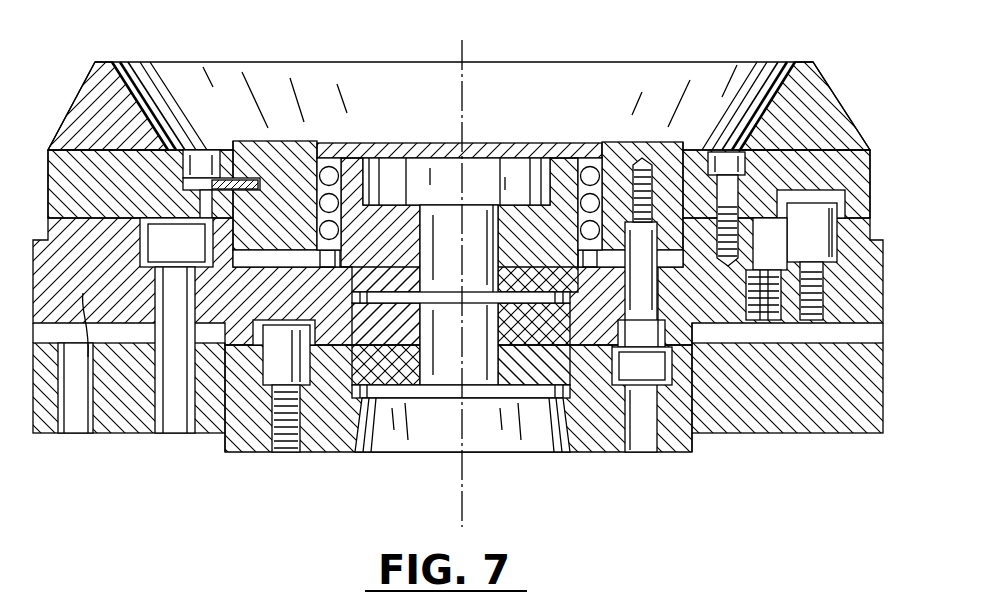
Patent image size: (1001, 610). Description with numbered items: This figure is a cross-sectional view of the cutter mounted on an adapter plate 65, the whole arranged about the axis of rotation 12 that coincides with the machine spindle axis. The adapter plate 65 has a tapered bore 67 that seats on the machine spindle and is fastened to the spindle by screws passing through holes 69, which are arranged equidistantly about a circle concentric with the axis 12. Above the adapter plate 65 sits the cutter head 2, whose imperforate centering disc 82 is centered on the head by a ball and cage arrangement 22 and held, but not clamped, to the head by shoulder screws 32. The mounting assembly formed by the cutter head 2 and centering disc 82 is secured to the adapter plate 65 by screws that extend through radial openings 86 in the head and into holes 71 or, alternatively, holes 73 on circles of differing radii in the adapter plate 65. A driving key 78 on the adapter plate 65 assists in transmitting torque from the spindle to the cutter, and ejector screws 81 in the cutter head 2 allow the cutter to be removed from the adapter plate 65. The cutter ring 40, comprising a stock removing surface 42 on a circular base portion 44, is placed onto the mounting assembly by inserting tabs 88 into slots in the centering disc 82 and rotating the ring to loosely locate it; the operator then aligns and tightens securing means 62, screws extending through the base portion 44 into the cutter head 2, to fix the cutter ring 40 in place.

The cutter head 2 is at (75, 338).
The axis of rotation 12 is at (463, 50).
The ball and cage arrangement 22 is at (588, 173).
The shoulder screws 32 is at (642, 352).
The cutter ring 40 is at (463, 116).
The stock removing surface 42 is at (133, 62).
The circular base portion 44 is at (70, 172).
The securing means 62 is at (733, 165).
The adapter plate 65 is at (830, 420).
The tapered bore 67 is at (438, 437).
The holes 69 is at (645, 447).
The holes 71 is at (182, 437).
The holes 73 is at (80, 417).
The driving key 78 is at (826, 244).
The ejector screws 81 is at (760, 325).
The centering disc 82 is at (520, 143).
The radial openings 86 is at (194, 256).
The tabs 88 is at (216, 150).